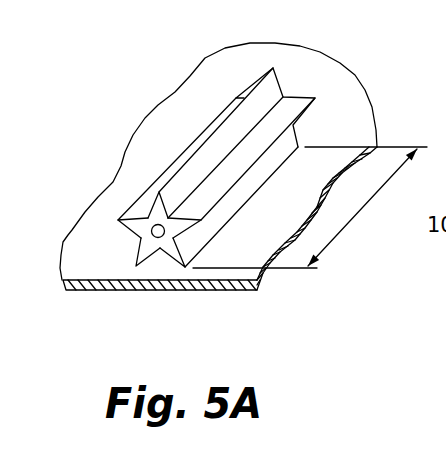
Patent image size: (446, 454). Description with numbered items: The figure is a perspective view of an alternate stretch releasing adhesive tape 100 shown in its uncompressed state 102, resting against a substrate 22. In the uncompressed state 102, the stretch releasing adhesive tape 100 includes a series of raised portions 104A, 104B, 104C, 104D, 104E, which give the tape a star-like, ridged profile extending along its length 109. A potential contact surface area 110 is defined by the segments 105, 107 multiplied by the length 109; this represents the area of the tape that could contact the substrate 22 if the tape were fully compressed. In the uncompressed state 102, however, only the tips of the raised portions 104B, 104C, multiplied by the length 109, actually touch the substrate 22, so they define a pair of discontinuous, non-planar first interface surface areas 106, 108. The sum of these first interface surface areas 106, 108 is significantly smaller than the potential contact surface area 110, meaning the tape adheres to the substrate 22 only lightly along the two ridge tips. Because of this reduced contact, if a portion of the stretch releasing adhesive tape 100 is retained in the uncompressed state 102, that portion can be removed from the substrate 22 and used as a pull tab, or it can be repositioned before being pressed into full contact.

The stretch releasing adhesive tape 100 is at (171, 139).
The uncompressed state 102 is at (300, 88).
The substrate 22 is at (350, 83).
The raised portion 104A is at (119, 220).
The raised portion 104B is at (138, 266).
The raised portion 104C is at (185, 268).
The raised portion 104D is at (202, 222).
The raised portion 104E is at (153, 189).
The segment 105 is at (147, 262).
The first interface surface area 106 is at (143, 261).
The segment 107 is at (173, 262).
The first interface surface area 108 is at (278, 170).
The length 109 is at (359, 207).
The potential contact surface area 110 is at (153, 258).